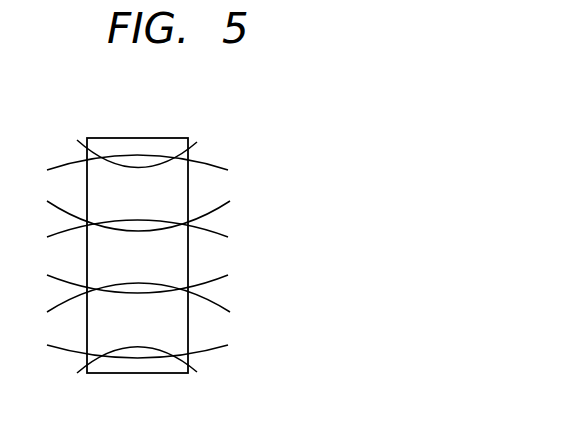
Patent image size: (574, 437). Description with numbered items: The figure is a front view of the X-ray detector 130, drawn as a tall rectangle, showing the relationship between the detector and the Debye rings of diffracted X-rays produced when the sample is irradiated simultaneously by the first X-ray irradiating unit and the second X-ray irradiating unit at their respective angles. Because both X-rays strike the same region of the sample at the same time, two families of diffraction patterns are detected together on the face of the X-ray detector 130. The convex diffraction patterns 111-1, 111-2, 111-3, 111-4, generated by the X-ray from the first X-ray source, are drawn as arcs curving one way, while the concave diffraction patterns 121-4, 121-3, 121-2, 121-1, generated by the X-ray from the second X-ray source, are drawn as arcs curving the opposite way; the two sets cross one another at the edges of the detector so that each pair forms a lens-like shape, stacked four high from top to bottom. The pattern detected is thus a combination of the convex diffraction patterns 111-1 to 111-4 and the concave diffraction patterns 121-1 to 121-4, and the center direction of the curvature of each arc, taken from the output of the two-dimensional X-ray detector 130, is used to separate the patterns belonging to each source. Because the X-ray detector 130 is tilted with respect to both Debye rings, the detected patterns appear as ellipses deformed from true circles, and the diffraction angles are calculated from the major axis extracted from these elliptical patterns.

The X-ray detector 130 is at (139, 138).
The concave diffraction pattern 121-4 is at (197, 142).
The concave diffraction pattern 121-3 is at (222, 206).
The concave diffraction pattern 121-2 is at (212, 281).
The concave diffraction pattern 121-1 is at (212, 349).
The convex diffraction pattern 111-1 is at (212, 165).
The convex diffraction pattern 111-2 is at (212, 231).
The convex diffraction pattern 111-3 is at (222, 307).
The convex diffraction pattern 111-4 is at (197, 372).